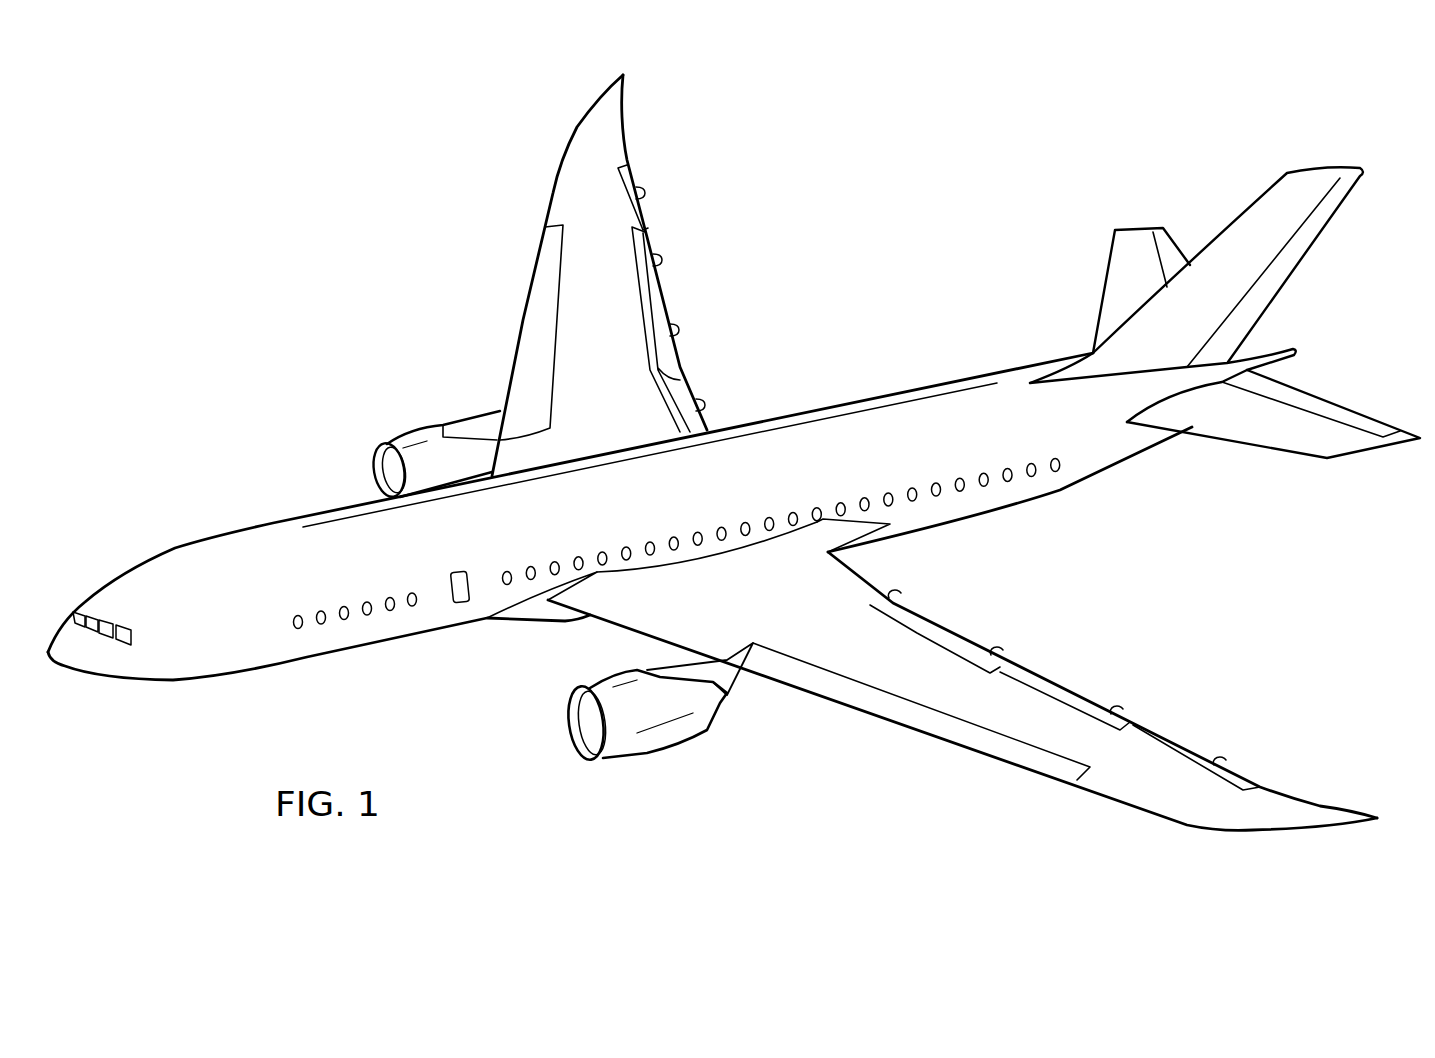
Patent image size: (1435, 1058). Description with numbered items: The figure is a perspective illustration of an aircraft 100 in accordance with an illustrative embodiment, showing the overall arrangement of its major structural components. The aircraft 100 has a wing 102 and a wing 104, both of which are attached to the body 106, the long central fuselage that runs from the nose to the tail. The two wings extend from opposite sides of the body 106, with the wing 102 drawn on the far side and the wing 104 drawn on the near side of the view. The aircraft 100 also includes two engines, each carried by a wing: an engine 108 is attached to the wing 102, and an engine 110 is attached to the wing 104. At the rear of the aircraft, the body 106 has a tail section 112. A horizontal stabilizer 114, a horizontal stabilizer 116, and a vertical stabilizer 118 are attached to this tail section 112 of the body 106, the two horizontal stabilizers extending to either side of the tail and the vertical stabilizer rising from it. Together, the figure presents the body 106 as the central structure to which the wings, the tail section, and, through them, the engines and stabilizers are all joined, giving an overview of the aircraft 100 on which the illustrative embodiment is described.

The aircraft 100 is at (355, 320).
The wing 102 is at (624, 113).
The wing 104 is at (1220, 830).
The body 106 is at (232, 532).
The engine 108 is at (421, 431).
The engine 110 is at (661, 753).
The tail section 112 is at (1175, 490).
The horizontal stabilizer 114 is at (1106, 285).
The horizontal stabilizer 116 is at (1270, 457).
The vertical stabilizer 118 is at (1304, 258).